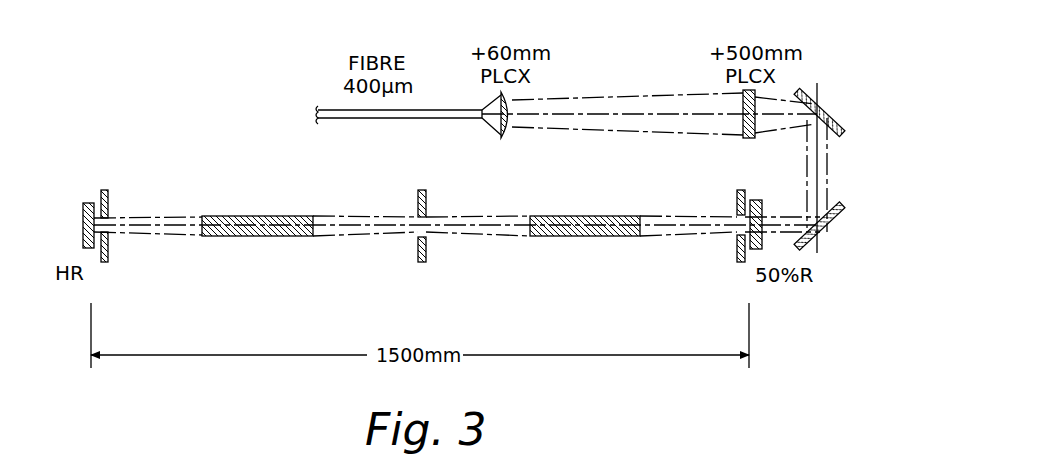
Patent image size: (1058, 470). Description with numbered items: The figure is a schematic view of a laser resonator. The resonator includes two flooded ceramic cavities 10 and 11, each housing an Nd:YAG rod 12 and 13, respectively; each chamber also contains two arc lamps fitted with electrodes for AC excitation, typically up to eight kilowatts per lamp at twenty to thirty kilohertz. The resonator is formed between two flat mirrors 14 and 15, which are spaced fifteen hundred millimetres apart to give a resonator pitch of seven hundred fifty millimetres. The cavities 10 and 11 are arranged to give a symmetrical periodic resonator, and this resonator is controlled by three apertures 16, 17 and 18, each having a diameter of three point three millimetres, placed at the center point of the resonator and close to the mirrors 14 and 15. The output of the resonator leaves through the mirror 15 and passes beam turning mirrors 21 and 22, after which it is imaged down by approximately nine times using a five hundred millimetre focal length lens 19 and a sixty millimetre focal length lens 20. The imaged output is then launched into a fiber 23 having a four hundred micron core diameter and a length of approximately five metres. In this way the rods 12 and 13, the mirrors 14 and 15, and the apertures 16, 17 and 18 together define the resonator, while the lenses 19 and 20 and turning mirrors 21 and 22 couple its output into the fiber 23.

The flooded ceramic cavity 10 is at (200, 158).
The flooded ceramic cavity 11 is at (500, 180).
The Nd:YAG rod 12 is at (260, 237).
The Nd:YAG rod 13 is at (590, 237).
The flat mirror 14 is at (82, 215).
The flat mirror 15 is at (763, 212).
The aperture 16 is at (108, 255).
The aperture 17 is at (418, 250).
The aperture 18 is at (738, 250).
The 500 mm focal length lens 19 is at (743, 137).
The 60 mm focal length lens 20 is at (508, 137).
The beam turning mirror 21 is at (823, 230).
The beam turning mirror 22 is at (820, 110).
The fiber 23 is at (420, 120).